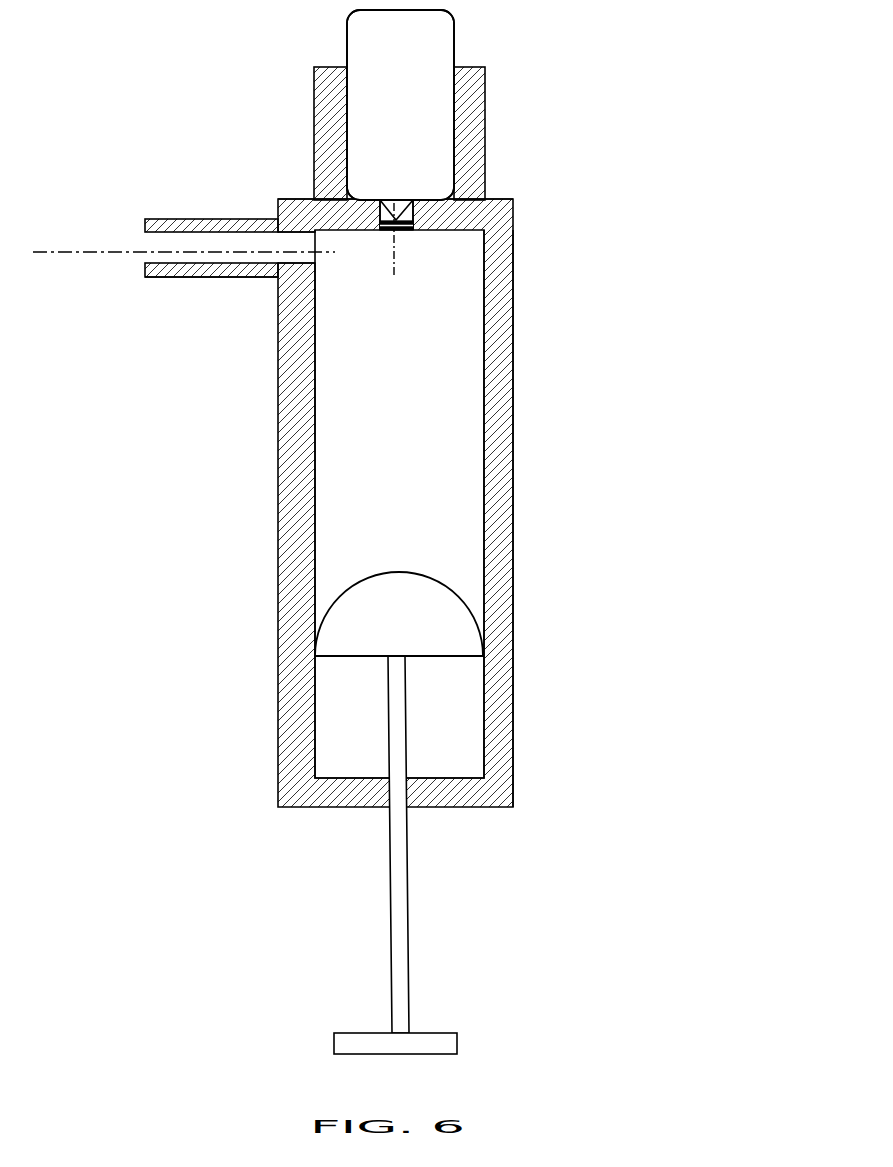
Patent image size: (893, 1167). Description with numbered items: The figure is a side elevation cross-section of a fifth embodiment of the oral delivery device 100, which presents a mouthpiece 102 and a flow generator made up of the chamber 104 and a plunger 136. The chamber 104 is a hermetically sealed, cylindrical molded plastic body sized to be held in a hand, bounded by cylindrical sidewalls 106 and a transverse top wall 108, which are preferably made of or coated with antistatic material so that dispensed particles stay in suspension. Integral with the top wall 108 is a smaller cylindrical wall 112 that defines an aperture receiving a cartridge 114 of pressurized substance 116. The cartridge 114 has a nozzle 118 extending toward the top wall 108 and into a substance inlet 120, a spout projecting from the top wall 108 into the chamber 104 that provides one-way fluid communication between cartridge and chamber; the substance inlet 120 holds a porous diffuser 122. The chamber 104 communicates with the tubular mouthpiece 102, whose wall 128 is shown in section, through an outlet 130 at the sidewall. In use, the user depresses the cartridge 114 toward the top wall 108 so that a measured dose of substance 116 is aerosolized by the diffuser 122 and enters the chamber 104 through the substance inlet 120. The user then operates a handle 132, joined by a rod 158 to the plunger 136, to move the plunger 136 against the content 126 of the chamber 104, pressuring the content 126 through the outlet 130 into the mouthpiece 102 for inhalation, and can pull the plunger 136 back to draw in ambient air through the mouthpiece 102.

The oral delivery device 100 is at (128, 130).
The mouthpiece 102 is at (168, 219).
The chamber 104 is at (513, 283).
The cylindrical sidewalls 106 is at (505, 407).
The transverse top wall 108 is at (513, 202).
The cylindrical wall 112 is at (314, 132).
The cartridge 114 is at (455, 42).
The pressurized substance 116 is at (417, 115).
The nozzle 118 is at (410, 196).
The substance inlet 120 is at (379, 231).
The diffuser 122 is at (413, 232).
The content 126 is at (411, 435).
The inlet conduit 128 is at (151, 278).
The outlet 130 is at (308, 258).
The handle 132 is at (457, 1050).
The plunger 136 is at (417, 624).
The plunger rod 158 is at (406, 805).